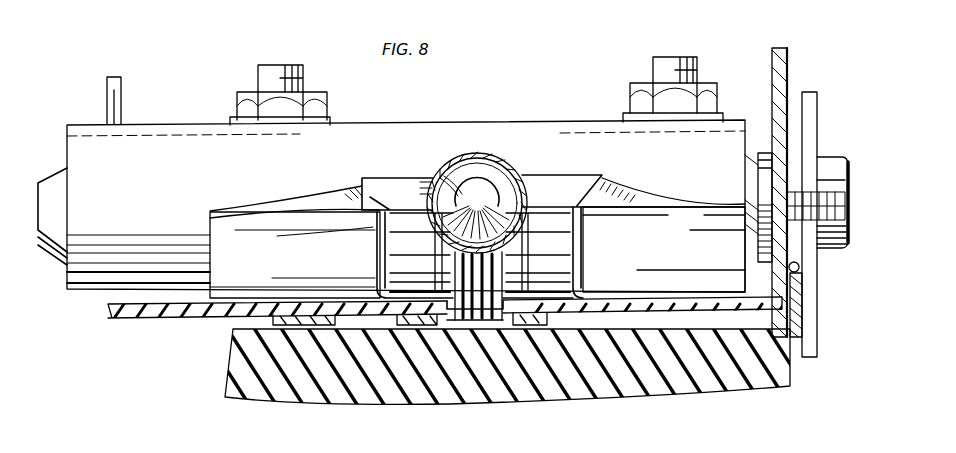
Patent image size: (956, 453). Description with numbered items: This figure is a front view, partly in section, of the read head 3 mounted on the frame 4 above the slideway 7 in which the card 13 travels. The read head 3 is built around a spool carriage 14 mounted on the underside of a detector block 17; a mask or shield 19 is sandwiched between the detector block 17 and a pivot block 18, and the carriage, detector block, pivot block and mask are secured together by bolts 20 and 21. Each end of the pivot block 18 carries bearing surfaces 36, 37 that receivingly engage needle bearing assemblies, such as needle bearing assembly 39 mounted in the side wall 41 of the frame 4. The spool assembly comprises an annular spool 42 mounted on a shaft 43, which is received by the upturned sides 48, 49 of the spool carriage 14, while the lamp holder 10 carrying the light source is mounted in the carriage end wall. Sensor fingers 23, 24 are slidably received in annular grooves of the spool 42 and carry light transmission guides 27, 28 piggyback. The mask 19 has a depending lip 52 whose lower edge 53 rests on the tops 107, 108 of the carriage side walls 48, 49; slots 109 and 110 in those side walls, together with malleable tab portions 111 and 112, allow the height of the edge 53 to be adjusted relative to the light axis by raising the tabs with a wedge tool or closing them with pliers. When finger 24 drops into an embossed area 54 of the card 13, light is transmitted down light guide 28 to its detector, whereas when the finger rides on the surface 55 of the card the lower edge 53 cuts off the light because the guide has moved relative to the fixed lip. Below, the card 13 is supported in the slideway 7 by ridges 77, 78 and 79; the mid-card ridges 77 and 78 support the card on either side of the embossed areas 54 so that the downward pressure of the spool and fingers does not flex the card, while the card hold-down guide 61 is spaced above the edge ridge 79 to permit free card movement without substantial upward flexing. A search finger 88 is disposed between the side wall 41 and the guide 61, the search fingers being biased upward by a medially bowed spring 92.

The read head 3 is at (174, 123).
The frame unit 4 is at (796, 84).
The slideway 7 is at (512, 386).
The lamp holder 10 is at (499, 168).
The card 13 is at (660, 332).
The spool carriage 14 is at (604, 290).
The detector block 17 is at (676, 256).
The pivot block 18 is at (231, 175).
The mask or shield 19 is at (650, 188).
The bolt 20 is at (675, 100).
The bolt 21 is at (290, 112).
The sensor finger 23 is at (520, 300).
The sensor finger 24 is at (476, 322).
The light transmission guide 27 is at (500, 200).
The light guide 28 is at (492, 196).
The bearing surface 36 is at (124, 225).
The bearing surface 37 is at (757, 173).
The needle bearing assembly 39 is at (832, 168).
The side wall 41 is at (806, 124).
The annular spool 42 is at (507, 266).
The shaft 43 is at (557, 250).
The upturned side 48 is at (580, 232).
The upturned side 49 is at (380, 253).
The depending lip 52 is at (418, 197).
The lower edge 53 is at (358, 198).
The embossed area 54 is at (425, 326).
The card surface 55 is at (516, 325).
The card hold-down guide 61 is at (778, 70).
The mid-card ridge 77 is at (402, 326).
The mid-card ridge 78 is at (625, 340).
The edge slideway ridge 79 is at (778, 328).
The search finger 88 is at (803, 318).
The spring 92 is at (800, 267).
The top of carriage side wall 107 is at (343, 212).
The top of carriage side wall 108 is at (600, 190).
The slot 109 is at (345, 238).
The slot 110 is at (690, 232).
The tab portion 111 is at (295, 255).
The tab portion 112 is at (664, 215).